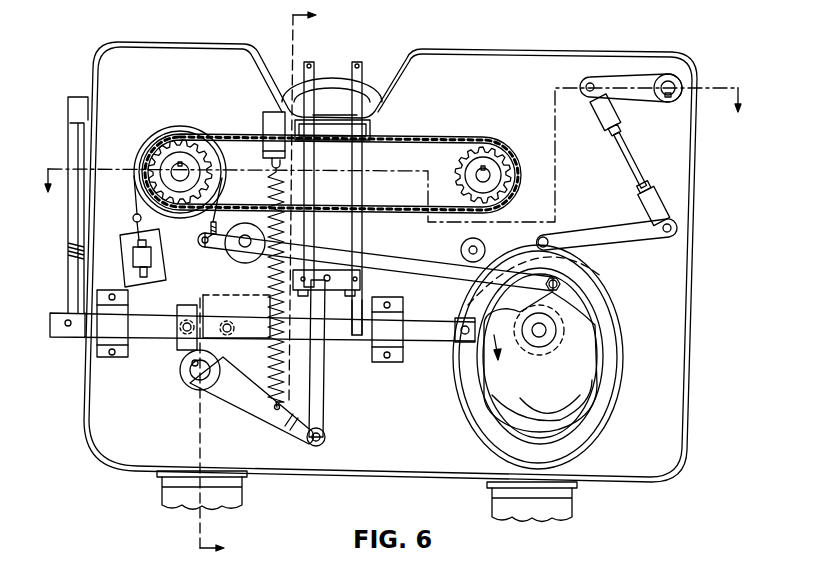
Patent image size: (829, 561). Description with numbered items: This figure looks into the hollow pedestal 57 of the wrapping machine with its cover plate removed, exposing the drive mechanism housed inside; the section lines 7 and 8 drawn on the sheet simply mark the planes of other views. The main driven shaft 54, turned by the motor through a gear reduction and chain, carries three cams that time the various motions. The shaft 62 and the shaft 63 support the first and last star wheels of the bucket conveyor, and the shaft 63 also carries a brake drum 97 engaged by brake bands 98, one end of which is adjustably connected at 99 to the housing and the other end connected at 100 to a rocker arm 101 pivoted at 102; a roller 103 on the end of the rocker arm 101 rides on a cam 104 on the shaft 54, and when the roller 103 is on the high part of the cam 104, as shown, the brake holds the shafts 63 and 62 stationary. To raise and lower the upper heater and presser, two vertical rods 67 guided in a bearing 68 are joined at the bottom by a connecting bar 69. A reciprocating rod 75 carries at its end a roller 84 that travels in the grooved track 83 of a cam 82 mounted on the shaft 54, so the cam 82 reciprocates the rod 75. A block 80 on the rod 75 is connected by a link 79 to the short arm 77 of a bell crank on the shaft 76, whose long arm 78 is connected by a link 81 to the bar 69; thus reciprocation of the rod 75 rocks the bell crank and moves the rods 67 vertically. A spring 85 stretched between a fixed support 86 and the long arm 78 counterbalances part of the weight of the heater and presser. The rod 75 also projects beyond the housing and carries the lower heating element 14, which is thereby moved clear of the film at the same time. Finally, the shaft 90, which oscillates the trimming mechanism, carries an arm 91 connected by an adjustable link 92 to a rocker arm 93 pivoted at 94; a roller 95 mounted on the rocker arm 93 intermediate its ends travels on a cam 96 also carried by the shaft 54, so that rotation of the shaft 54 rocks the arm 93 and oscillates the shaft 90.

The section line 7- 7 is at (393, 155).
The recess 8 is at (265, 284).
The heating element 14 is at (82, 100).
The shaft 54 is at (546, 328).
The pedestal 57 is at (567, 52).
The shaft 62 is at (490, 173).
The shaft 63 is at (187, 165).
The rods 67 is at (358, 70).
The bearing 68 is at (368, 132).
The bar 69 is at (362, 283).
The reciprocating rod 75 is at (352, 336).
The shaft 76 is at (182, 373).
The short arm 77 is at (228, 349).
The long arm 78 is at (242, 401).
The link 79 is at (206, 314).
The block 80 is at (186, 306).
The link 81 is at (321, 407).
The cam 82 is at (617, 383).
The grooved track 83 is at (597, 412).
The roller 84 is at (460, 353).
The spring 85 is at (267, 189).
The fixed support 86 is at (266, 116).
The shaft 90 is at (674, 86).
The arm 91 is at (637, 97).
The adjustable link 92 is at (637, 163).
The rocker arm 93 is at (603, 232).
The pivot 94 is at (461, 247).
The roller 95 is at (546, 240).
The cam 96 is at (593, 258).
The brake drum 97 is at (158, 208).
The brake bands 98 is at (143, 137).
The adjustable connection 99 is at (134, 219).
The connection 100 is at (204, 243).
The rocker arm 101 is at (382, 258).
The pivot 102 is at (232, 263).
The roller 103 is at (562, 284).
The cam 104 is at (548, 362).